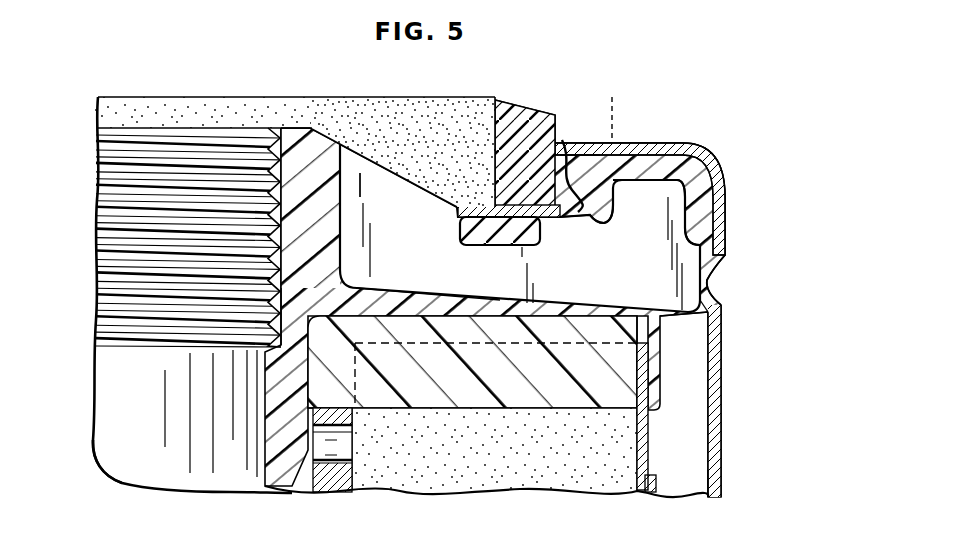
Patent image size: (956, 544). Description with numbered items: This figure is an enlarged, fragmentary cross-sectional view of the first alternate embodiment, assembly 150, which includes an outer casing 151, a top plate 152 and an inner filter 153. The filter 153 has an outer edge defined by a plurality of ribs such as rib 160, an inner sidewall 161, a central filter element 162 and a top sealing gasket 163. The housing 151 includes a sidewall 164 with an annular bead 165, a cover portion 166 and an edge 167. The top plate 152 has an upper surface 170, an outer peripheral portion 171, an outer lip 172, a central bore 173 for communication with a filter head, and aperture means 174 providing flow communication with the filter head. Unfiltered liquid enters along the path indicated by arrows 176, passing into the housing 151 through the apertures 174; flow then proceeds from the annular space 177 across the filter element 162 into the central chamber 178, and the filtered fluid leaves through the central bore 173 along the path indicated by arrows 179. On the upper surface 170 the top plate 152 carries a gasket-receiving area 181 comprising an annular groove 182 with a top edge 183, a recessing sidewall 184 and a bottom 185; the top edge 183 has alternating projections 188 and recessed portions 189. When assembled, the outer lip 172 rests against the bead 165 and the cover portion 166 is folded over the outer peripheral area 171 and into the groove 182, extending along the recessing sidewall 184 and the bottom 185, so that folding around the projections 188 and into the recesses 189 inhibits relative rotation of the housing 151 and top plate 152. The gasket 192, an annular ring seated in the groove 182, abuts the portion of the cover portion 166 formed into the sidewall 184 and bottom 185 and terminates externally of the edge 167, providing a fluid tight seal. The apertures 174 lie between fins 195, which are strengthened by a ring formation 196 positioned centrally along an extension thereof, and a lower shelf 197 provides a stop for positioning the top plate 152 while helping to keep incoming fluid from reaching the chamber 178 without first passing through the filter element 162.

The assembly 150 is at (672, 108).
The outer casing 151 is at (732, 373).
The top plate 152 is at (307, 120).
The inner filter 153 is at (672, 428).
The rib 160 is at (657, 485).
The inner sidewall 161 is at (347, 479).
The central filter element 162 is at (472, 473).
The top sealing gasket 163 is at (480, 400).
The sidewall 164 is at (722, 470).
The annular bead 165 is at (712, 273).
The cover portion 166 is at (630, 143).
The edge 167 is at (448, 192).
The upper surface 170 is at (287, 127).
The outer peripheral portion 171 is at (680, 170).
The outer lip 172 is at (705, 233).
The central bore 173 is at (113, 427).
The aperture means 174 is at (376, 190).
The arrows 176 is at (470, 273).
The annular space 177 is at (700, 404).
The central chamber 178 is at (216, 488).
The arrows 179 is at (160, 173).
The gasket-receiving area 181 is at (550, 230).
The annular groove 182 is at (618, 219).
The top edge 183 is at (566, 125).
The recessing sidewall 184 is at (588, 142).
The bottom 185 is at (572, 222).
The projections 188 is at (549, 137).
The recessed portions 189 is at (616, 107).
The gasket 192 is at (495, 97).
The fins 195 is at (722, 306).
The ring formation 196 is at (500, 233).
The lower shelf 197 is at (443, 294).